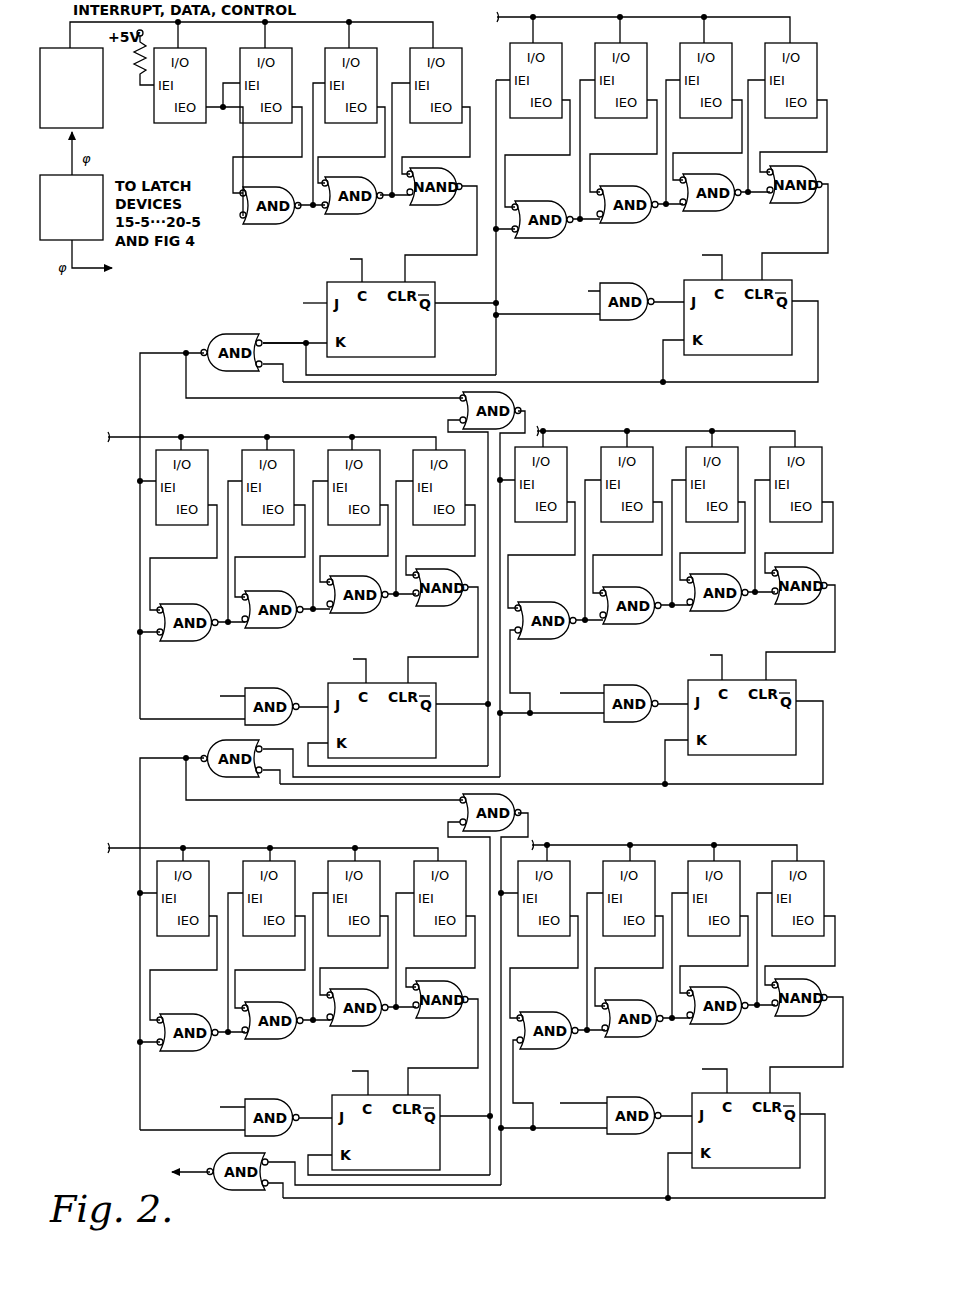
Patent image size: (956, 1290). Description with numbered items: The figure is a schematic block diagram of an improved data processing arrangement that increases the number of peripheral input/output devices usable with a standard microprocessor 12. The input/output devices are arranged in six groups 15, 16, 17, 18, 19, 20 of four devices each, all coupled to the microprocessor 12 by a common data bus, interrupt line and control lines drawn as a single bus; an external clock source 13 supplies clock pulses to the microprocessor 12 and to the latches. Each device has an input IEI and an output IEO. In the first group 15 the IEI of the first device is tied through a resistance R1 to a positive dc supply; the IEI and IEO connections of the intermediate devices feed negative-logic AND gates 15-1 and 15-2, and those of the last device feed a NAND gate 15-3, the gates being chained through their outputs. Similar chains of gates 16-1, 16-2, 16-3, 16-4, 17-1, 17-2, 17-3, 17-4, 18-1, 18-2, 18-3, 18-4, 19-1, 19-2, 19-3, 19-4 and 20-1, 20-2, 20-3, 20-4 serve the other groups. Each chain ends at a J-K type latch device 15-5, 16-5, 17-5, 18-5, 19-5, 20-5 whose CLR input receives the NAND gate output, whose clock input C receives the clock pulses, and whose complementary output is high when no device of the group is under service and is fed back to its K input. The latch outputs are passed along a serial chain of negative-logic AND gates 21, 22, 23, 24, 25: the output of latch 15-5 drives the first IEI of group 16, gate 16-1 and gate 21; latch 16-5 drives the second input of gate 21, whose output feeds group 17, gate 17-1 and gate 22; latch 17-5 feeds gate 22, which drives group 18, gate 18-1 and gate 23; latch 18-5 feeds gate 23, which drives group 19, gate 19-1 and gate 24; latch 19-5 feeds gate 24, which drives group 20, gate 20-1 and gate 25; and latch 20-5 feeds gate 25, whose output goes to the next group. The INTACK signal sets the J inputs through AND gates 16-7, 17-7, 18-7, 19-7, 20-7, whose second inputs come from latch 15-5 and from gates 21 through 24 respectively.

The microprocessor 12 is at (43, 48).
The external clock source 13 is at (43, 175).
The resistance R1 is at (135, 60).
The first group of input/output devices 15 is at (325, 211).
The AND logic gate 15-1 is at (285, 226).
The AND logic gate 15-2 is at (358, 213).
The NAND logic gate 15-3 is at (431, 206).
The latch device 15-5 is at (436, 348).
The group of input/output devices 16 is at (555, 198).
The AND gate 16-1 is at (553, 237).
The AND gate 16-2 is at (643, 222).
The AND gate 16-3 is at (706, 209).
The NAND gate 16-4 is at (793, 204).
The latch device 16-5 is at (778, 281).
The AND gate 16-7 is at (627, 283).
The group of input/output devices 17 is at (275, 599).
The AND gate 17-1 is at (205, 641).
The AND gate 17-2 is at (285, 628).
The AND gate 17-3 is at (360, 613).
The NAND gate 17-4 is at (432, 606).
The latch device 17-5 is at (430, 683).
The AND gate 17-7 is at (263, 688).
The group of input/output devices 18 is at (557, 592).
The AND gate 18-1 is at (558, 641).
The AND gate 18-2 is at (645, 625).
The AND gate 18-3 is at (717, 611).
The NAND gate 18-4 is at (790, 605).
The latch device 18-5 is at (780, 680).
The AND gate 18-7 is at (629, 685).
The group of input/output devices 19 is at (277, 1009).
The AND gate 19-1 is at (202, 1052).
The AND gate 19-2 is at (285, 1040).
The AND gate 19-3 is at (368, 1024).
The NAND gate 19-4 is at (433, 1017).
The latch device 19-5 is at (432, 1095).
The AND gate 19-7 is at (265, 1099).
The group of input/output devices 20 is at (563, 1020).
The AND gate 20-1 is at (560, 1050).
The AND gate 20-2 is at (645, 1036).
The AND gate 20-3 is at (722, 1022).
The NAND gate 20-4 is at (793, 1017).
The latch device 20-5 is at (784, 1093).
The AND gate 20-7 is at (623, 1097).
The AND gate 21 is at (228, 373).
The AND gate 22 is at (516, 393).
The AND gate 23 is at (228, 783).
The AND gate 24 is at (518, 797).
The AND gate 25 is at (246, 1192).